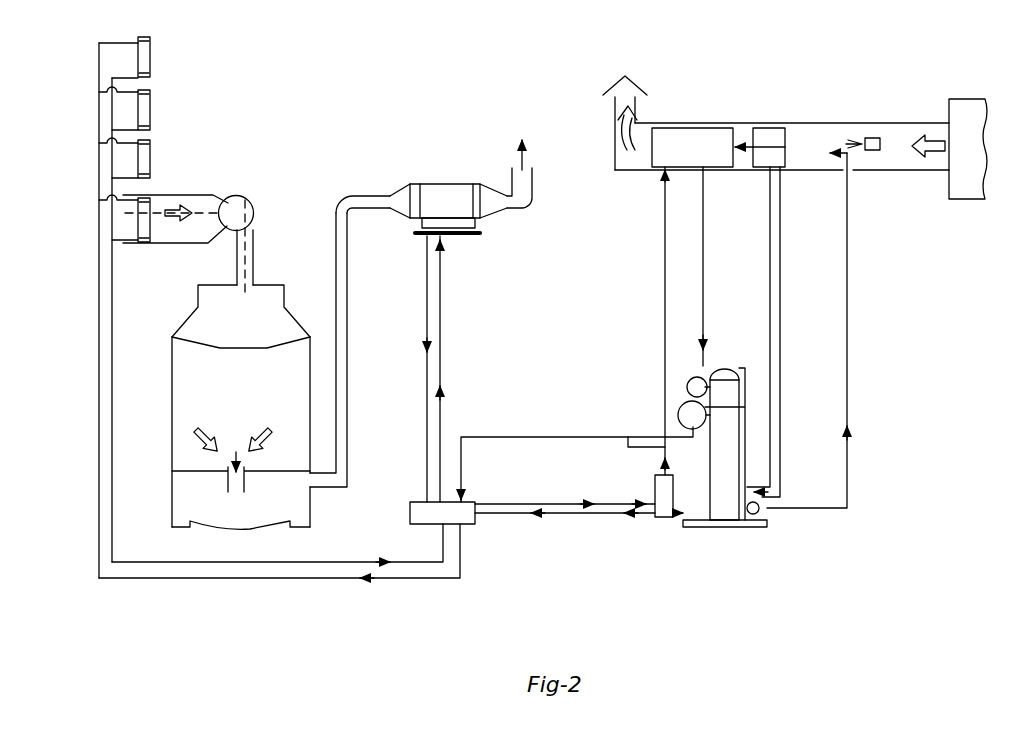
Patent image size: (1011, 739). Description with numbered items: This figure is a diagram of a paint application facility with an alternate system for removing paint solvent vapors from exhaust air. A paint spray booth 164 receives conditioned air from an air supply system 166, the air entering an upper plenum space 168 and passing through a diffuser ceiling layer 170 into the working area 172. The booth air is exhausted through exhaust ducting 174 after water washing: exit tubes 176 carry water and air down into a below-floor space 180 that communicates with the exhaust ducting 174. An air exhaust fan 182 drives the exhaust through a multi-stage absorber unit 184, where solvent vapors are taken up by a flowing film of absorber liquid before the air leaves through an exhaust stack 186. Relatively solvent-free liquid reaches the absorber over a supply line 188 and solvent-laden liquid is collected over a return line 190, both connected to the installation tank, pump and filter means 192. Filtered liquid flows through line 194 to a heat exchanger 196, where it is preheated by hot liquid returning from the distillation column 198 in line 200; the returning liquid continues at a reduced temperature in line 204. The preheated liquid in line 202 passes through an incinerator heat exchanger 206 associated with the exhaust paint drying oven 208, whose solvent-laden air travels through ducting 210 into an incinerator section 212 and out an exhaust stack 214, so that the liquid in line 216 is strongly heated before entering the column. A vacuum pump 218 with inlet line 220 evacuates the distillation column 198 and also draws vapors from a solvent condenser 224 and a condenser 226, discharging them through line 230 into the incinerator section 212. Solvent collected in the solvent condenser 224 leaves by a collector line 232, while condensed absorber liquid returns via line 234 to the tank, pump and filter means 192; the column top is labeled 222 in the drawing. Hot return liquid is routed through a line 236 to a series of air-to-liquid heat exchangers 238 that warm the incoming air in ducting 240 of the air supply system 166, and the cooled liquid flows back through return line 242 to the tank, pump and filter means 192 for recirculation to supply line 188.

The paint spray booth 164 is at (215, 406).
The air supply system 166 is at (218, 195).
The upper plenum space 168 is at (198, 300).
The diffuser ceiling layer 170 is at (240, 330).
The working area 172 is at (285, 402).
The exhaust ducting 174 is at (355, 405).
The exit tubes 176 is at (228, 465).
The below-floor space 180 is at (292, 512).
The air exhaust fan 182 is at (338, 200).
The multi-stage absorber unit 184 is at (428, 182).
The exhaust stack 186 is at (534, 186).
The supply line 188 is at (440, 270).
The return line 190 is at (427, 300).
The installation tank, pump and filter means 192 is at (408, 506).
The line 194 is at (508, 504).
The heat exchanger 196 is at (652, 486).
The distillation column 198 is at (748, 452).
The line 200 is at (697, 527).
The line 202 is at (630, 435).
The line 204 is at (645, 516).
The incinerator heat exchanger 206 is at (650, 168).
The exhaust paint drying oven 208 is at (965, 199).
The ducting 210 is at (900, 122).
The incinerator section 212 is at (862, 134).
The exhaust stack 214 is at (612, 125).
The line 216 is at (703, 225).
The vacuum pump 218 is at (760, 503).
The inlet line 220 is at (745, 379).
The inlet line 222 is at (723, 366).
The solvent condenser 224 is at (692, 378).
The condenser 226 is at (680, 408).
The line 230 is at (840, 510).
The collector line 232 is at (683, 398).
The line 234 is at (525, 437).
The line 236 is at (305, 580).
The air-to-liquid heat exchangers 238 is at (150, 65).
The ducting 240 is at (205, 195).
The return line 242 is at (272, 562).